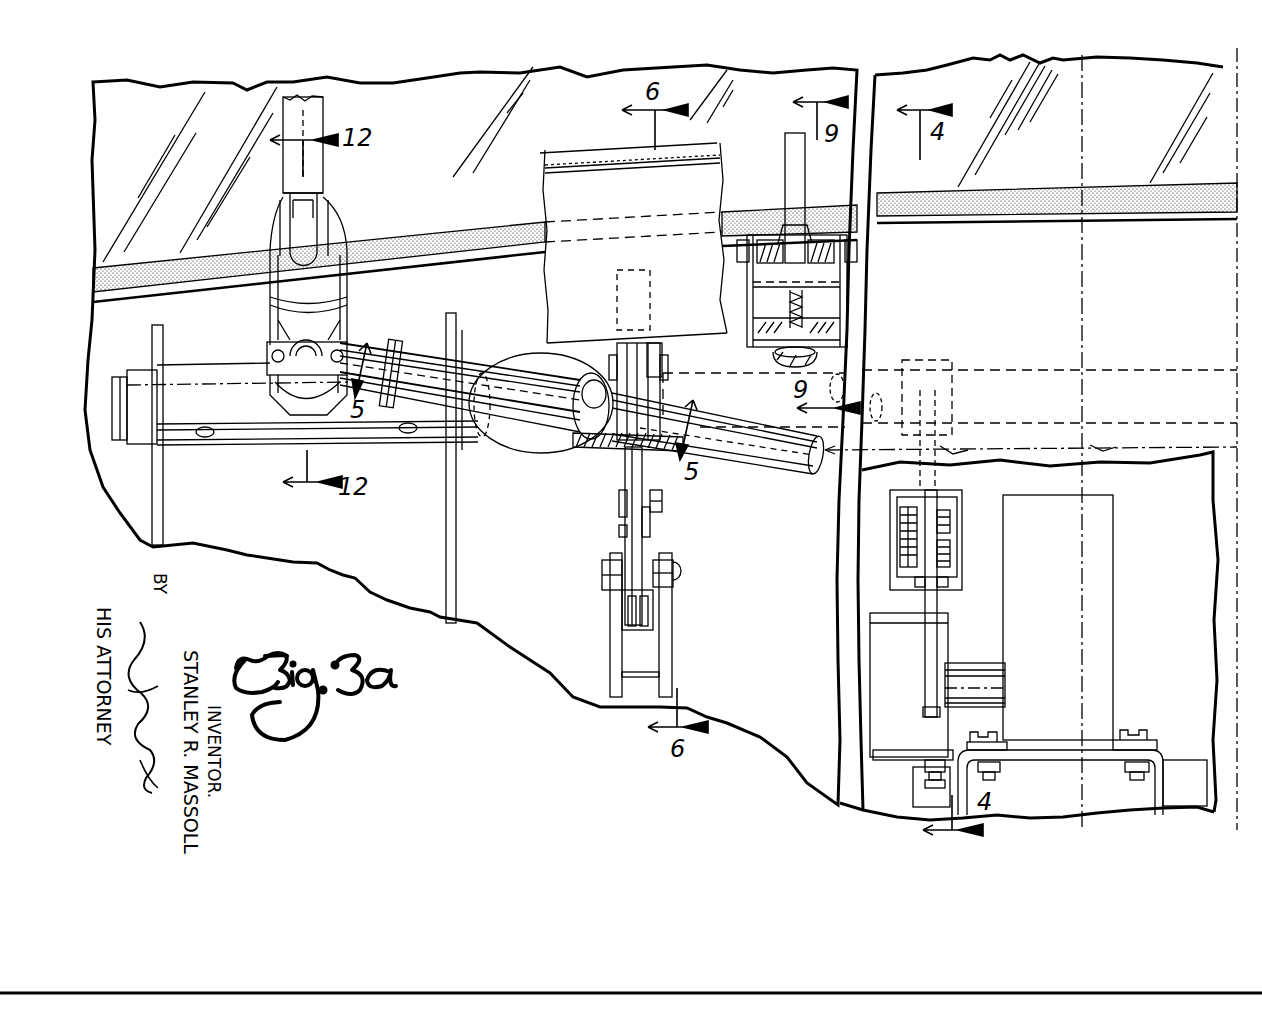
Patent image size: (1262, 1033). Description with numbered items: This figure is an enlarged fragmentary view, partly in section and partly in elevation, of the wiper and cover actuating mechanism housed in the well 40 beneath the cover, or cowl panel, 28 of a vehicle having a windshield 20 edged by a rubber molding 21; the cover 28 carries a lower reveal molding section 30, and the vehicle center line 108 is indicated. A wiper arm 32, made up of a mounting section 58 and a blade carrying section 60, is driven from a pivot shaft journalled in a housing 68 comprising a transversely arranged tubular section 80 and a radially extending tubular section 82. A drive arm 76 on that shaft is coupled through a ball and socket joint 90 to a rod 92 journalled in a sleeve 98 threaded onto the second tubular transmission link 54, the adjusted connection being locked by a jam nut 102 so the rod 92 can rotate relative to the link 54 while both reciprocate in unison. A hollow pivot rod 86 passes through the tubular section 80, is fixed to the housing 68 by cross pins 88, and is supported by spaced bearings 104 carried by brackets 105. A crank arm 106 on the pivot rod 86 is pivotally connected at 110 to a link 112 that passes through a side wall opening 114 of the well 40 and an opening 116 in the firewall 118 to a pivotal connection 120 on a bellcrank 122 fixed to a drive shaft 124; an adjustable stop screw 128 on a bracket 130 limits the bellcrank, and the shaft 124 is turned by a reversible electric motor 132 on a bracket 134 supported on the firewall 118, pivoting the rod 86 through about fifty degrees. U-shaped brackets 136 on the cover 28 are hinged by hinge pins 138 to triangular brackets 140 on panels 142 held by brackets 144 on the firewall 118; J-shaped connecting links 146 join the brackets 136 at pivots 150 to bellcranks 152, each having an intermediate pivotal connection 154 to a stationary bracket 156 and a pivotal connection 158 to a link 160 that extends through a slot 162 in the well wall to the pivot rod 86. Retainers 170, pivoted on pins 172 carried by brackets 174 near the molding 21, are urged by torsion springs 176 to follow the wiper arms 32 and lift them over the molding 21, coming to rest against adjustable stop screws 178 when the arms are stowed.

The windshield 20 is at (567, 87).
The rubber molding 21 is at (414, 235).
The cover 28 is at (549, 200).
The lower reveal molding section 30 is at (580, 158).
The wiper arm 32 is at (362, 191).
The well 40 is at (274, 545).
The second tubular transmission link 54 is at (757, 462).
The mounting section 58 is at (293, 227).
The blade carrying section 60 is at (313, 112).
The housing 68 is at (270, 327).
The drive arm 76 is at (290, 392).
The tubular section 80 is at (300, 444).
The radially extending tubular section 82 is at (343, 328).
The pivot rod 86 is at (1138, 370).
The cross pins 88 is at (206, 438).
The ball and socket joint 90 is at (267, 356).
The rod 92 is at (379, 343).
The sleeve 98 is at (520, 344).
The jam nut 102 is at (587, 428).
The bearings 104 is at (138, 378).
The brackets 105 is at (160, 518).
The crank arm 106 is at (930, 510).
The center line 108 is at (1079, 258).
The pivotal connection 110 is at (950, 518).
The link 112 is at (917, 563).
The side wall opening 114 is at (955, 503).
The opening 116 is at (958, 584).
The firewall 118 is at (1217, 777).
The pivotal connection 120 is at (952, 550).
The bellcrank 122 is at (932, 637).
The drive shaft 124 is at (998, 662).
The adjustable stop screw 128 is at (925, 787).
The bracket 130 is at (912, 684).
The reversible electric motor 132 is at (1107, 526).
The bracket 134 is at (1163, 757).
The U-shaped brackets 136 is at (652, 367).
The hinge pins 138 is at (614, 341).
The triangular brackets 140 is at (653, 344).
The panels 142 is at (617, 452).
The brackets 144 is at (653, 452).
The curved connecting links 146 is at (630, 470).
The pivotal connection 150 is at (662, 507).
The bellcrank 152 is at (650, 535).
The intermediate pivotal connection 154 is at (677, 574).
The stationary bracket 156 is at (668, 651).
The pivotal connection 158 is at (628, 614).
The link 160 is at (628, 534).
The slots 162 is at (619, 518).
The retainers 170 is at (786, 138).
The pins 172 is at (855, 253).
The brackets 174 is at (843, 295).
The torsion spring 176 is at (828, 259).
The adjustable stop screws 178 is at (774, 360).